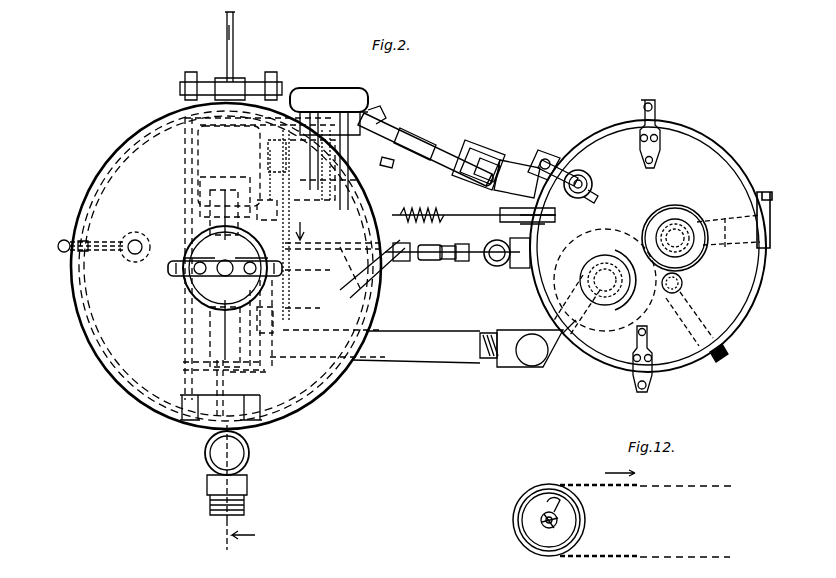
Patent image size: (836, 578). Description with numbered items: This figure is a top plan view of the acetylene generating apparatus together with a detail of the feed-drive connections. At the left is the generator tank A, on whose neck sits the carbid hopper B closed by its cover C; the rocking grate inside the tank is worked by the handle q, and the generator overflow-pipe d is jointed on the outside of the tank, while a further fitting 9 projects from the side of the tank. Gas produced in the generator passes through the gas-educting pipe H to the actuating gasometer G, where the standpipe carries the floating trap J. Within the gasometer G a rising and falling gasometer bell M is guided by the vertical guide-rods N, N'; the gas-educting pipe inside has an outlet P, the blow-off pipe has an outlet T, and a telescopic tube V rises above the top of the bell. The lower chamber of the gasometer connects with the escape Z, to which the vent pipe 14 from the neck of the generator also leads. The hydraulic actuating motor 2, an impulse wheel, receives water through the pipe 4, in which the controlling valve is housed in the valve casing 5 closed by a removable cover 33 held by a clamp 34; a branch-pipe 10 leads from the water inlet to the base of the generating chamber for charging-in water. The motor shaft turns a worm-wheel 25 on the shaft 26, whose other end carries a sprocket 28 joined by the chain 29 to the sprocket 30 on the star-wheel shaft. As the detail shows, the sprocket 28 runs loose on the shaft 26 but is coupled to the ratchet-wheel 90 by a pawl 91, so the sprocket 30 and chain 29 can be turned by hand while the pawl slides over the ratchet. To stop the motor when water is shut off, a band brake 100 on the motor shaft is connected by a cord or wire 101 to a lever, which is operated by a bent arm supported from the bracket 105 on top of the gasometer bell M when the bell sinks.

In FIG. 2, the generator tank A is at (232, 12).
In FIG. 2, the handle q is at (236, 40).
In FIG. 2, the hydraulic actuating motor 2 is at (318, 88).
In FIG. 2, the pipe 4 is at (440, 145).
In FIG. 2, the valve casing 5 is at (532, 152).
In FIG. 2, the knob 9 is at (63, 252).
In FIG. 2, the branch-pipe 10 is at (436, 210).
In FIG. 2, the pipe 14 is at (456, 262).
In FIG. 2, the worm-wheel 25 is at (362, 150).
In FIG. 2, the shaft 26 is at (396, 163).
In FIG. 12, the shaft 26 is at (542, 528).
In FIG. 2, the sprocket 28 is at (276, 151).
In FIG. 12, the sprocket 28 is at (531, 490).
In FIG. 2, the chain 29 is at (364, 180).
In FIG. 12, the chain 29 is at (578, 486).
In FIG. 2, the sprocket 30 is at (300, 308).
In FIG. 2, the removable cover 33 is at (490, 150).
In FIG. 2, the clamp 34 is at (476, 140).
In FIG. 2, the ratchet-wheel 90 is at (282, 155).
In FIG. 12, the ratchet-wheel 90 is at (540, 519).
In FIG. 2, the pawl 91 is at (282, 167).
In FIG. 12, the pawl 91 is at (551, 500).
In FIG. 2, the band brake 100 is at (312, 225).
In FIG. 2, the cord or wire 101 is at (478, 230).
In FIG. 2, the bracket 105 is at (536, 224).
In FIG. 2, the carbid hopper B is at (226, 266).
In FIG. 2, the cover C is at (205, 285).
In FIG. 2, the overflow-pipe d is at (244, 456).
In FIG. 2, the actuating gasometer G is at (592, 125).
In FIG. 2, the gas-educting pipe H is at (445, 350).
In FIG. 2, the floating trap J is at (650, 302).
In FIG. 2, the gasometer bell M is at (639, 187).
In FIG. 2, the vertical guide-rods N is at (669, 125).
In FIG. 2, the vertical guide-rod N' is at (667, 363).
In FIG. 2, the outlet P is at (732, 356).
In FIG. 2, the outlet T is at (764, 210).
In FIG. 2, the telescopic tube V is at (708, 258).
In FIG. 2, the escape Z is at (496, 267).